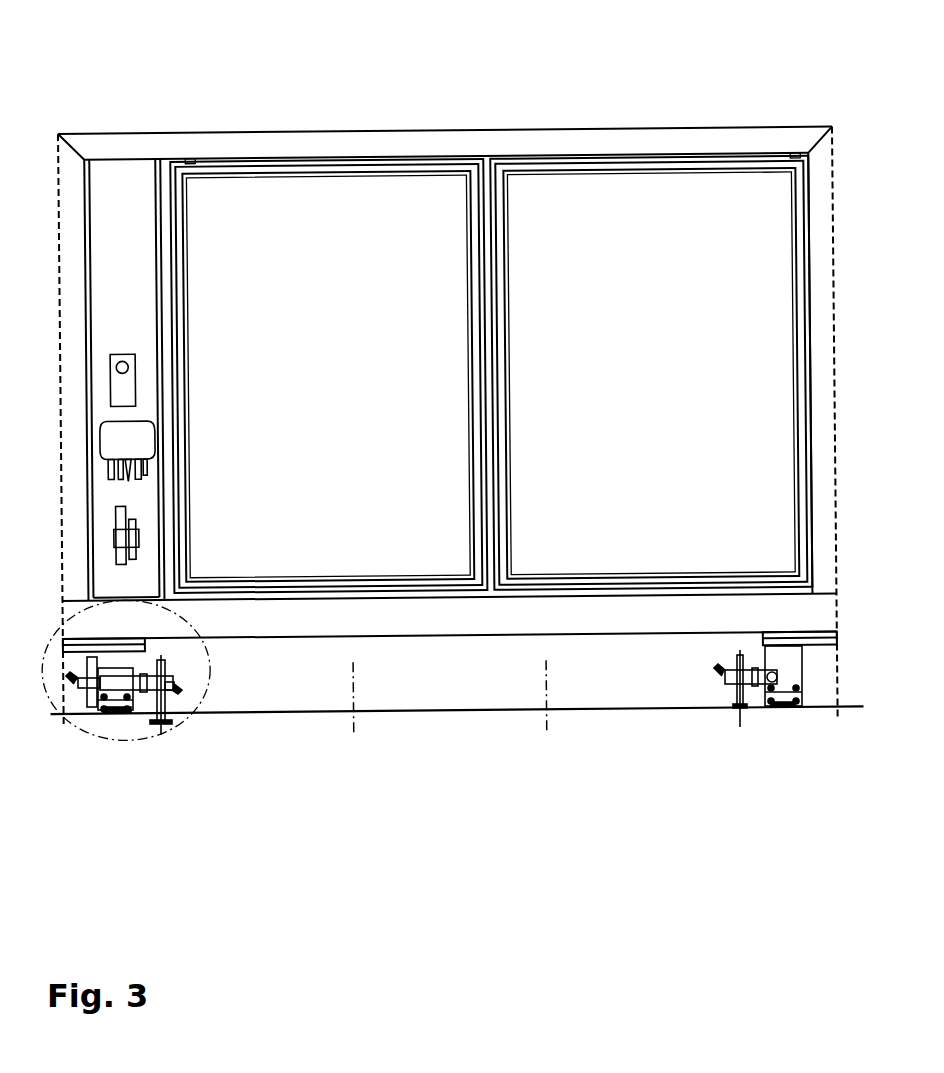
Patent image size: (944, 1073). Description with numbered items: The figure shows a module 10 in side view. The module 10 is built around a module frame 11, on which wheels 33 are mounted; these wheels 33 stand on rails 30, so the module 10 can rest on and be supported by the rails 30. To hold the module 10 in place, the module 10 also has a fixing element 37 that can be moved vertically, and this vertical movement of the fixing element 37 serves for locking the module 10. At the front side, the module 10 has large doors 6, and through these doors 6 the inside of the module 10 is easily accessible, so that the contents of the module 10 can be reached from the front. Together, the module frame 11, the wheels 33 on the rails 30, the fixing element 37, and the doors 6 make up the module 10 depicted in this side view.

The module 10 is at (172, 108).
The doors 6 is at (553, 243).
The module frame 11 is at (583, 138).
The rails 30 is at (517, 708).
The wheels 33 is at (117, 714).
The fixing element 37 is at (163, 705).